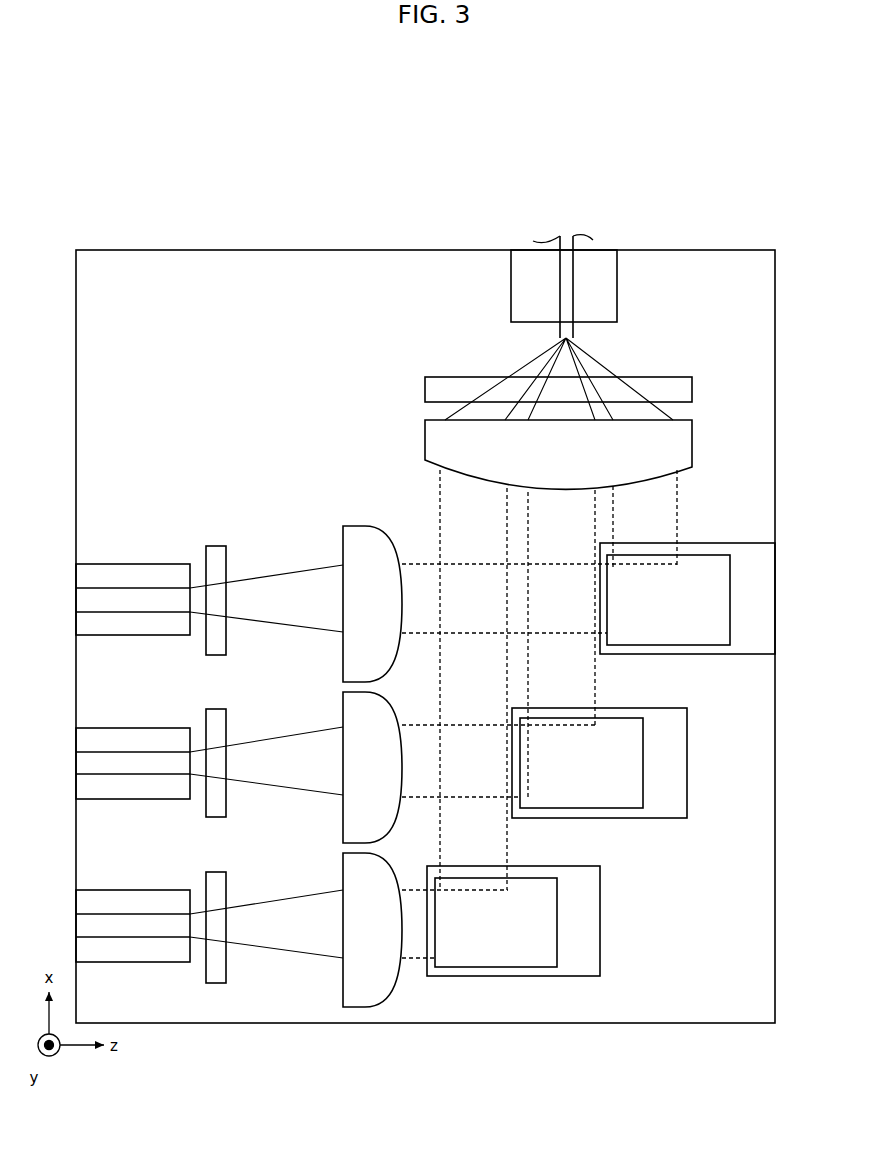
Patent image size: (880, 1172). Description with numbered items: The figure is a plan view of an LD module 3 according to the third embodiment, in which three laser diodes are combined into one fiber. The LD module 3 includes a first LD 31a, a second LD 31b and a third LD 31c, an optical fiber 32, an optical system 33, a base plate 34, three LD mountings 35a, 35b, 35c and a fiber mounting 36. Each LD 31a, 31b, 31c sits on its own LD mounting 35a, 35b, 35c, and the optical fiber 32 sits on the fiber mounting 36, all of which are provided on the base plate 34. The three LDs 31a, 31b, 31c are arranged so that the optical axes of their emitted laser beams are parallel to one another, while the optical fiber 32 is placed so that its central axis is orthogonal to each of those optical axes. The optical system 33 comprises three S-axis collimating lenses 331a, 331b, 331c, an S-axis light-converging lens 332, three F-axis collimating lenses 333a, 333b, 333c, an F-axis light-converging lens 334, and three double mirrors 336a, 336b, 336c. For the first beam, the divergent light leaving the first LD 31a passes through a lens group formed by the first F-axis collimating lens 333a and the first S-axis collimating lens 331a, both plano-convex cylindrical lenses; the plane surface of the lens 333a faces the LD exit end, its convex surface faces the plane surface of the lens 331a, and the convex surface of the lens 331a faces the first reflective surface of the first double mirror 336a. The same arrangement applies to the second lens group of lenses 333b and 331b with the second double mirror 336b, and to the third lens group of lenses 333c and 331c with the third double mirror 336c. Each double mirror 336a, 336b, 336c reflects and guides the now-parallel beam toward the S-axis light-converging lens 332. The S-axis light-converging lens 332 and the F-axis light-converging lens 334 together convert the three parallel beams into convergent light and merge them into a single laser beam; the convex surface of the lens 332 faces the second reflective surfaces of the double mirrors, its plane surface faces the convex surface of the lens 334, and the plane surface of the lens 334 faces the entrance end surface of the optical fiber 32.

The LD module 3 is at (680, 150).
The base plate 34 is at (400, 250).
The fiber mounting 36 is at (511, 287).
The optical fiber 32 is at (573, 285).
The F-axis light-converging lens 334 is at (667, 377).
The S-axis light-converging lens 332 is at (425, 443).
The optical system 33 is at (328, 491).
The first LD 31a is at (107, 588).
The second LD 31b is at (107, 752).
The third LD 31c is at (107, 914).
The first LD mounting 35a is at (166, 564).
The second LD mounting 35b is at (166, 728).
The third LD mounting 35c is at (166, 890).
The first F-axis collimating lens 333a is at (222, 546).
The second F-axis collimating lens 333b is at (222, 709).
The third F-axis collimating lens 333c is at (222, 872).
The first S-axis collimating lens 331a is at (343, 546).
The second S-axis collimating lens 331b is at (343, 711).
The third S-axis collimating lens 331c is at (343, 874).
The first double mirror 336a is at (722, 543).
The second double mirror 336b is at (630, 708).
The third double mirror 336c is at (545, 866).